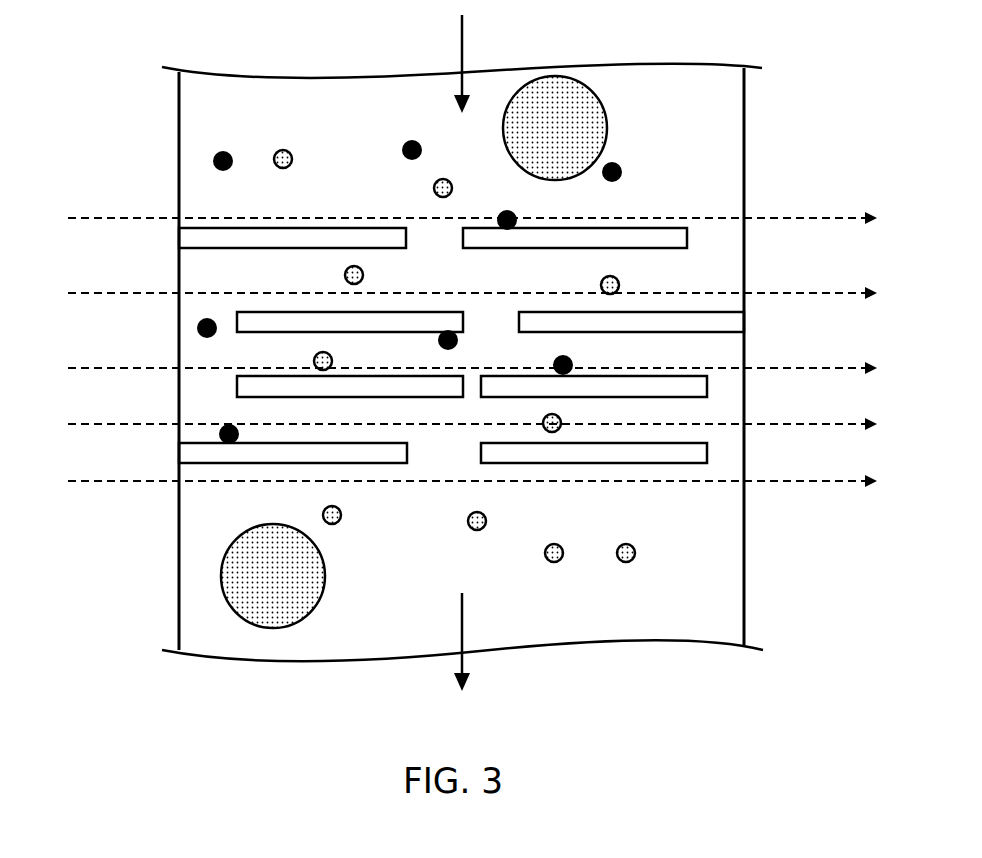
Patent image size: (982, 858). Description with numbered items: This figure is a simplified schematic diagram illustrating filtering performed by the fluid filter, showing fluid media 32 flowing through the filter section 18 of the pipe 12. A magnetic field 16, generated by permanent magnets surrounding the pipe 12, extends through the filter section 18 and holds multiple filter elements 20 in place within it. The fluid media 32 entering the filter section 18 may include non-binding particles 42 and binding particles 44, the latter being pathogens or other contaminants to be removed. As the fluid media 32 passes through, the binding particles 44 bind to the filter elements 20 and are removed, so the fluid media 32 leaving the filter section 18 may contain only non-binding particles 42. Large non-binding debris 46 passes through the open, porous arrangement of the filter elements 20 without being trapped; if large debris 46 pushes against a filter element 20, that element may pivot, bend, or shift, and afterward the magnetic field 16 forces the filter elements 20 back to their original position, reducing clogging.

The pipe 12 is at (747, 130).
The magnetic field 16 is at (124, 232).
The filter section 18 is at (719, 534).
The filter elements 20 is at (230, 240).
The fluid media 32 is at (462, 45).
The non-binding particles 42 is at (292, 158).
The binding particles 44 is at (620, 170).
The large non-binding debris 46 is at (578, 97).